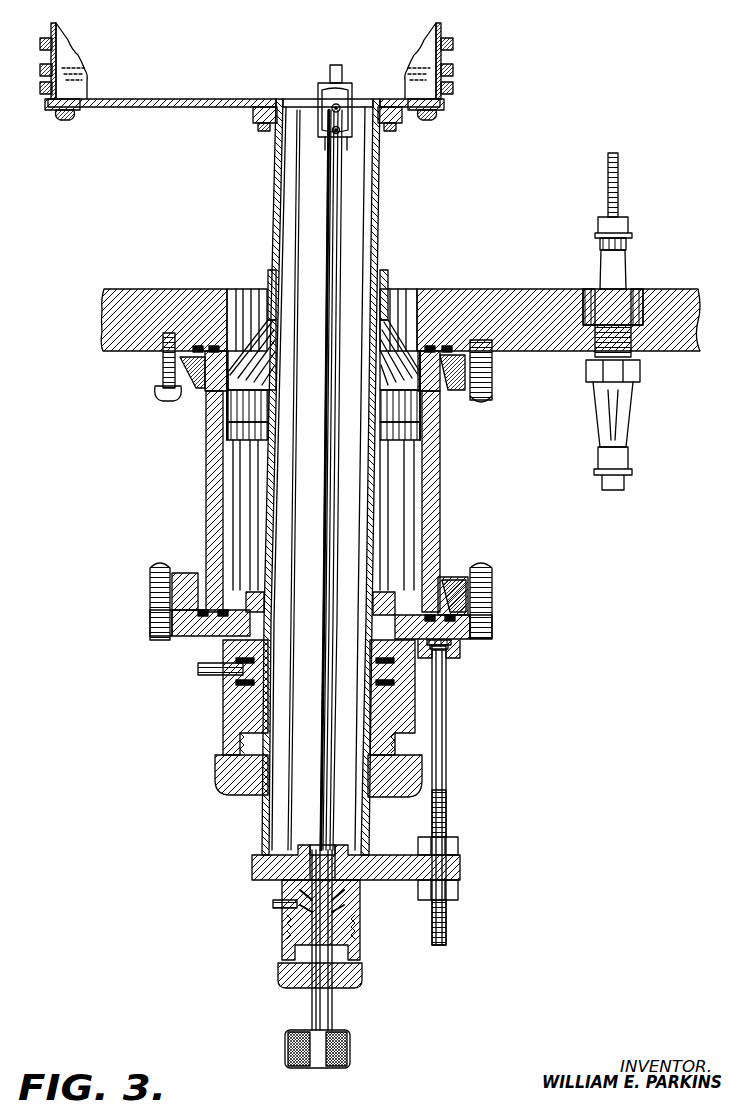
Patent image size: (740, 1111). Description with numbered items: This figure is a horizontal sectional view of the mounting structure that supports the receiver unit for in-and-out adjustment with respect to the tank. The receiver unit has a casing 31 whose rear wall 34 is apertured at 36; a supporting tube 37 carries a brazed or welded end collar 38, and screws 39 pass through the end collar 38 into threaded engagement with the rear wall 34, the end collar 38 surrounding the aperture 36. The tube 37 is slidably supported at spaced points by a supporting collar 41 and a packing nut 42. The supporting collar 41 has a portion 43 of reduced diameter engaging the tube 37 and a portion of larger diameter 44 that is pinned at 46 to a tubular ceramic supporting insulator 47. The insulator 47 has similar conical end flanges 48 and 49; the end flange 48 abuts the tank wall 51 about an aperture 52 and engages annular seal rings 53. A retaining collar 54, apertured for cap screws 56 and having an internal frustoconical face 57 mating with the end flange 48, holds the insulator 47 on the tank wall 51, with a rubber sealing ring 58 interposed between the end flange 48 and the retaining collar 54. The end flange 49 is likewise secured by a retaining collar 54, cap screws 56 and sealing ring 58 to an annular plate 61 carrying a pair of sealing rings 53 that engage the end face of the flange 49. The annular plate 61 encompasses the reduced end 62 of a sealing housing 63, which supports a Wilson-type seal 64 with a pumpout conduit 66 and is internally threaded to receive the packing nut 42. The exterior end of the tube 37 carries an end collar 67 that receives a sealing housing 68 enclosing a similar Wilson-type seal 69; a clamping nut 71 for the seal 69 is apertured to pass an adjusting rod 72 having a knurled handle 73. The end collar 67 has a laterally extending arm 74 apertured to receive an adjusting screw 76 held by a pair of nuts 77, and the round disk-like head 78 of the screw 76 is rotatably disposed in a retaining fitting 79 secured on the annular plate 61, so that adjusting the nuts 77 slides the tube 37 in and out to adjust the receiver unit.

The casing 31 is at (155, 111).
The rear wall 34 is at (205, 98).
The aperture 36 is at (298, 99).
The supporting tube 37 is at (275, 195).
The end collar 38 is at (254, 124).
The screws 39 is at (398, 127).
The supporting collar 41 is at (260, 332).
The packing nut 42 is at (214, 759).
The portion of reduced diameter 43 is at (266, 272).
The portion of larger diameter 44 is at (226, 427).
The pin 46 is at (212, 418).
The supporting insulator 47 is at (205, 494).
The conical end flange 48 is at (213, 346).
The conical end flange 49 is at (190, 637).
The tank wall 51 is at (126, 287).
The aperture 52 is at (400, 299).
The annular seal rings 53 is at (212, 346).
The retaining collar 54 is at (454, 393).
The cap screws 56 is at (486, 403).
The internal frustoconical face 57 is at (484, 381).
The sealing ring 58 is at (162, 379).
The annular plate 61 is at (454, 641).
The reduced end 62 is at (250, 599).
The sealing housing 63 is at (412, 702).
The seal 64 is at (415, 694).
The pumpout conduit 66 is at (196, 679).
The end collar 67 is at (250, 866).
The sealing housing 68 is at (358, 942).
The seal 69 is at (285, 923).
The clamping nut 71 is at (277, 981).
The adjusting rod 72 is at (321, 704).
The knurled handle 73 is at (350, 1055).
The arm 74 is at (416, 879).
The adjusting screw 76 is at (446, 791).
The nuts 77 is at (460, 888).
The head 78 is at (430, 649).
The retaining fitting 79 is at (442, 644).